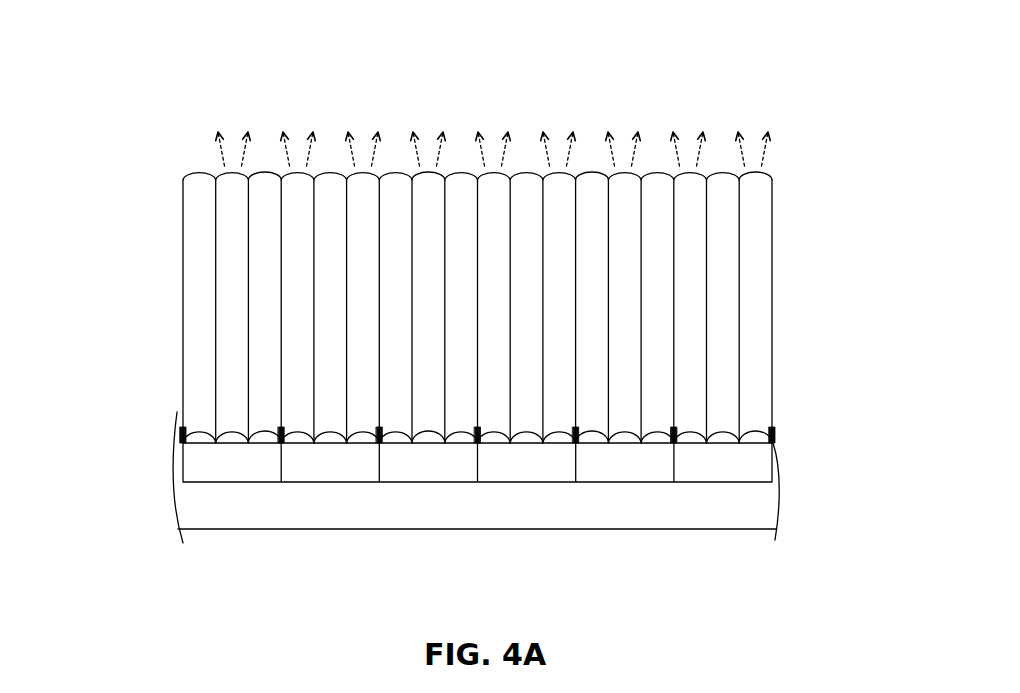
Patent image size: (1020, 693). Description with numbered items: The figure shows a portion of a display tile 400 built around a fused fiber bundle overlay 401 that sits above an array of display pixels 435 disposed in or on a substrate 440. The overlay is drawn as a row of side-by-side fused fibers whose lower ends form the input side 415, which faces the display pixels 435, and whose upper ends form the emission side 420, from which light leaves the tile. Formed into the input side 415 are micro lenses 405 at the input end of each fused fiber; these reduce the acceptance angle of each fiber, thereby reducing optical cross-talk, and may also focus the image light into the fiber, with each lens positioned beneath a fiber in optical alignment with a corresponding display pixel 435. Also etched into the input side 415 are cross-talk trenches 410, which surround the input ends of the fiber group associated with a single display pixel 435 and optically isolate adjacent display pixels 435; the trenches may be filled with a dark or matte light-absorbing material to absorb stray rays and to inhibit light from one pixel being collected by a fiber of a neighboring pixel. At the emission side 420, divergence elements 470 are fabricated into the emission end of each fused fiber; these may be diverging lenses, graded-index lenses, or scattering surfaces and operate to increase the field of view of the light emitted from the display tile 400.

The display tile 400 is at (848, 135).
The fused fiber bundle overlay 401 is at (168, 440).
The micro lenses 405 is at (752, 437).
The cross-talk trenches 410 is at (774, 432).
The input side 415 is at (415, 457).
The emission side 420 is at (200, 122).
The display pixels 435 is at (477, 462).
The substrate 440 is at (476, 477).
The divergence elements 470 is at (458, 176).